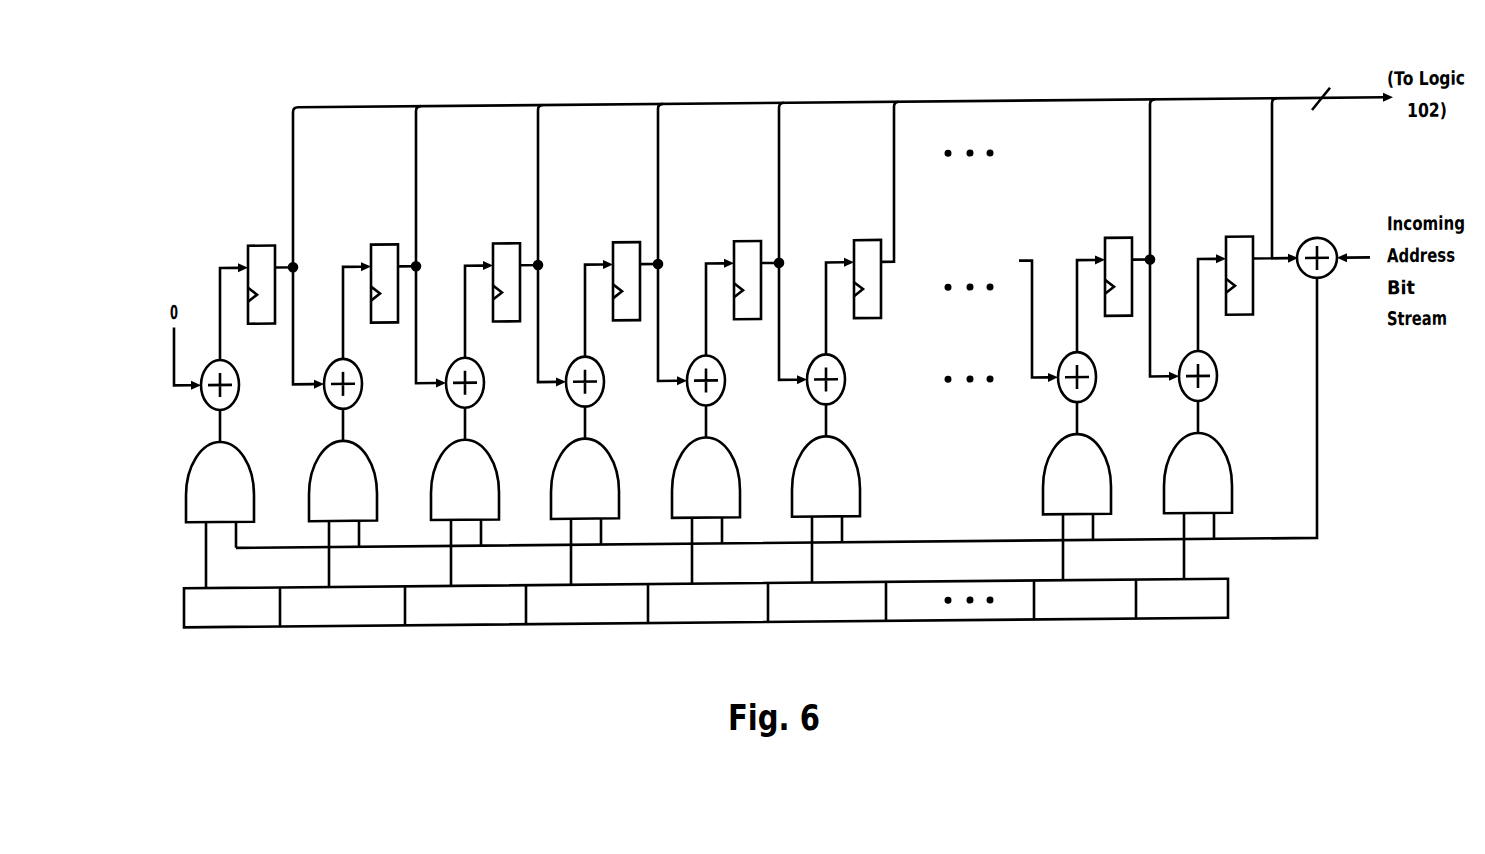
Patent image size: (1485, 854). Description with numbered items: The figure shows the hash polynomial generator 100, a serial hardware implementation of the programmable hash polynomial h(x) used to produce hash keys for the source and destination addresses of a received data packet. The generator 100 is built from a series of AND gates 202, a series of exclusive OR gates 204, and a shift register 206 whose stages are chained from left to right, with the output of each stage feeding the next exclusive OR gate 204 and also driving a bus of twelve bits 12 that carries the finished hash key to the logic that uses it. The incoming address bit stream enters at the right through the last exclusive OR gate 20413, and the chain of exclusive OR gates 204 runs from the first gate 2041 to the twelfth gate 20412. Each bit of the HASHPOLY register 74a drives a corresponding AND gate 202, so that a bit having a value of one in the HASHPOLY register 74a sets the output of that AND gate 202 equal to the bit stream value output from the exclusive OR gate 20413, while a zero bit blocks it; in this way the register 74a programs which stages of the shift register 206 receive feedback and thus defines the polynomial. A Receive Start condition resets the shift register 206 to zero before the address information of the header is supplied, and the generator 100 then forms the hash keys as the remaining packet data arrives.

The hash polynomial generator 100 is at (905, 76).
The 12-bit output bus to logic 102 12 is at (1317, 89).
The shift register 206 is at (210, 276).
The exclusive OR gates 204 is at (746, 315).
The first exclusive-OR gate 2041 is at (213, 404).
The twelfth exclusive-OR gate 20412 is at (1218, 383).
The exclusive OR gate 20413 is at (1317, 248).
The AND gates 202 is at (203, 485).
The HASHPOLY register 74a is at (1242, 606).